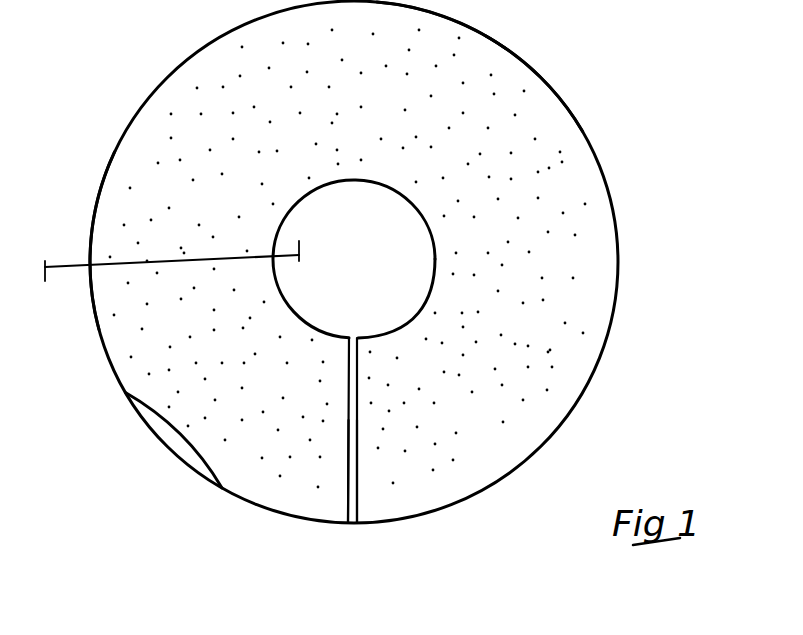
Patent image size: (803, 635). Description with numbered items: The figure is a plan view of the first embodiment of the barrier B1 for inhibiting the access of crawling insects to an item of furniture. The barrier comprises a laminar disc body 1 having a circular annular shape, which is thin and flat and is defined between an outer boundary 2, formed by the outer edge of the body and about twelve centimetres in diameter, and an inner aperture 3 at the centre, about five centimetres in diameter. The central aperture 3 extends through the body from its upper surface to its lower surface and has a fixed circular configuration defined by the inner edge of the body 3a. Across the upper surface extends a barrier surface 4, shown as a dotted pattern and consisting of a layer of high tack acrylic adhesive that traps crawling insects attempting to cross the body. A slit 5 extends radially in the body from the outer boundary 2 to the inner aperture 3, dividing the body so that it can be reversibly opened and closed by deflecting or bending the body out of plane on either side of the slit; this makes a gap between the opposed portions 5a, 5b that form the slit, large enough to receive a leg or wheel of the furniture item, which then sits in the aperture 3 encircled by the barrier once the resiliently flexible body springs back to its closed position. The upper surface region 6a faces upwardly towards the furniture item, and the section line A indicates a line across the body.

The laminar body 1 is at (142, 129).
The outer boundary 2 is at (111, 362).
The inner aperture 3 is at (388, 278).
The inner edge of the body 3a is at (398, 336).
The barrier surface 4 is at (515, 131).
The slit 5 is at (355, 425).
The opposed portion 5a is at (357, 500).
The opposed portion 5b is at (347, 523).
The disc surface region 6a is at (205, 450).
The barrier B1 is at (600, 72).
The section line A-A' A is at (176, 248).